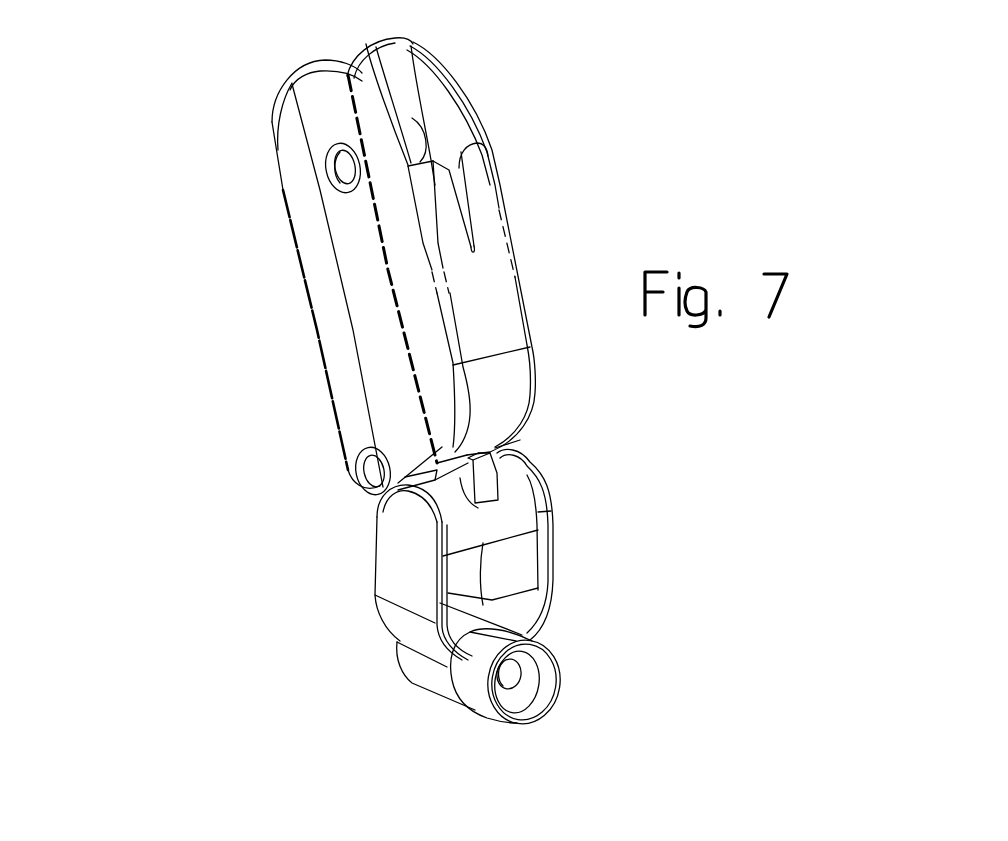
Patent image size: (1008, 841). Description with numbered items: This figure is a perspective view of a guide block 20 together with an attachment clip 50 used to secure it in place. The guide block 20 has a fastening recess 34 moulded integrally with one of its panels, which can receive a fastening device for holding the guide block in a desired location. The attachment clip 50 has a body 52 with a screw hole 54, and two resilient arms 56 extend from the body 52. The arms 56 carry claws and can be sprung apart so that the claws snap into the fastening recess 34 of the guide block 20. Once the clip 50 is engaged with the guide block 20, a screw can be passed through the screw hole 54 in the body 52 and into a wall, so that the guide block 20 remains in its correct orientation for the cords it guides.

The guide block 20 is at (247, 370).
The attachment clip 50 is at (310, 670).
The resilient arms 56 is at (413, 548).
The fastening recess 34 is at (497, 527).
The body 52 is at (437, 673).
The screw hole 54 is at (520, 680).